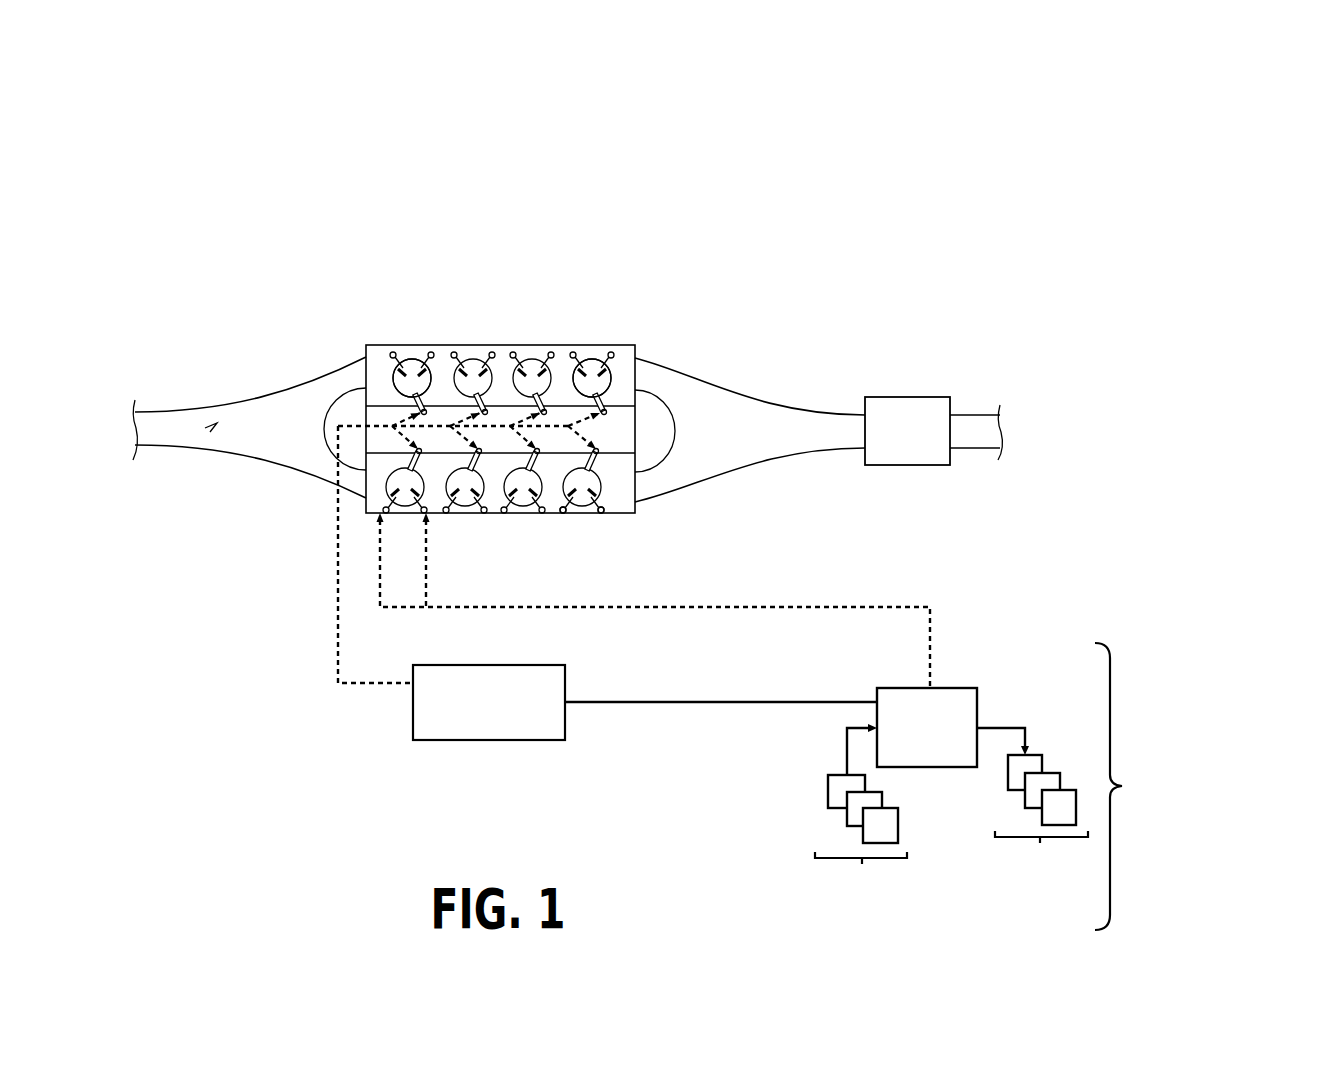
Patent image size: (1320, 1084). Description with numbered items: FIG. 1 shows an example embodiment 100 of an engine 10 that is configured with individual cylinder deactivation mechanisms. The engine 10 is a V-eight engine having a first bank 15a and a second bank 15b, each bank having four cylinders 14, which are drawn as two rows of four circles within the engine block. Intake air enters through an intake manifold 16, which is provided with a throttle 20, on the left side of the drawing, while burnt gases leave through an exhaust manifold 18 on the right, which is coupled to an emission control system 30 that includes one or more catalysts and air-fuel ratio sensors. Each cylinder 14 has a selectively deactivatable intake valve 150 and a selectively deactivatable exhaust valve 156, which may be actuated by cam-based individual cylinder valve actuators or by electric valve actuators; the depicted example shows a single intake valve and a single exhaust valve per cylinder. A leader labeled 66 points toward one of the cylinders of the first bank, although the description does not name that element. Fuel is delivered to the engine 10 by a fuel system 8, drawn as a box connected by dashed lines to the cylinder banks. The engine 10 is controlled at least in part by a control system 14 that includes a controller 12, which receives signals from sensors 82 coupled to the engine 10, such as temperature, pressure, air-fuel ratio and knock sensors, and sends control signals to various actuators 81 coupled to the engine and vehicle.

The example embodiment 100 is at (1010, 92).
The engine 10 is at (638, 307).
The cylinders 14 is at (604, 383).
The first bank 15a is at (418, 345).
The second bank 15b is at (437, 515).
The intake manifold 16 is at (240, 403).
The exhaust manifold 18 is at (703, 398).
The throttle 20 is at (198, 432).
The emission control system 30 is at (906, 397).
The fuel injector 66 is at (406, 390).
The intake valves 150 is at (566, 513).
The exhaust valves 156 is at (598, 513).
The fuel system 8 is at (555, 714).
The controller 12 is at (677, 640).
The actuators 81 is at (1032, 811).
The sensors 82 is at (861, 818).